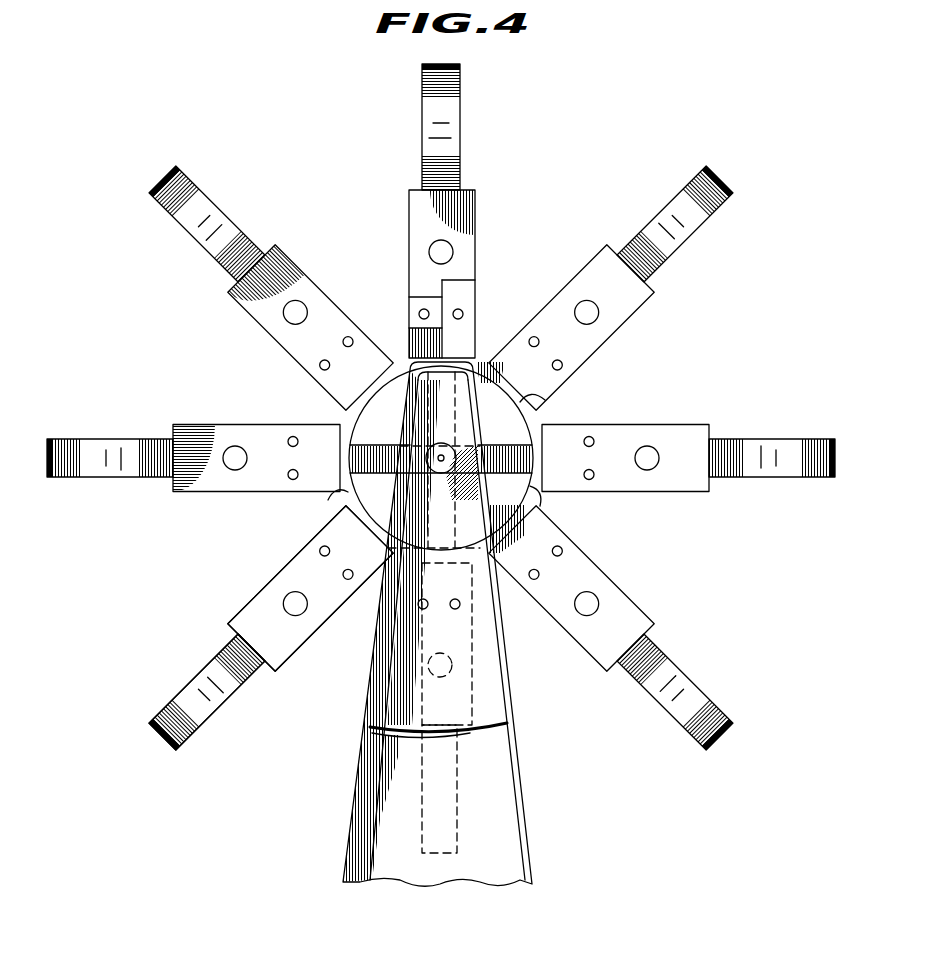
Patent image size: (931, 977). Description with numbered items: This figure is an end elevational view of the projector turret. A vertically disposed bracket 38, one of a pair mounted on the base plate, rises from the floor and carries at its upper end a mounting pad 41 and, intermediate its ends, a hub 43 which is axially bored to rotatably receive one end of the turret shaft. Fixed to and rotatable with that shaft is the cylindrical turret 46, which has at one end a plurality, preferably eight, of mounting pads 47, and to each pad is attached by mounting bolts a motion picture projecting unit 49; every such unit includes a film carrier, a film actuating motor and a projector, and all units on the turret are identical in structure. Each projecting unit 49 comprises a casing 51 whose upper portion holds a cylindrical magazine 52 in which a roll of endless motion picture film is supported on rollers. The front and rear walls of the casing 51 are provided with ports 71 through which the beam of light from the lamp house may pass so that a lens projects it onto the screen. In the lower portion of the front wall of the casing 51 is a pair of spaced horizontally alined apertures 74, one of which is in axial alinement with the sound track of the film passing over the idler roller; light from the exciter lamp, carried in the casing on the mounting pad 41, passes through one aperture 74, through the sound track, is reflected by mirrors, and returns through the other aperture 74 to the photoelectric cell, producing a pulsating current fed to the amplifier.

The bracket 38 is at (523, 785).
The mounting pad 41 is at (454, 356).
The hub 43 is at (453, 452).
The cylindrical turret 46 is at (537, 498).
The mounting pads 47 is at (530, 396).
The motion picture projecting unit 49 is at (486, 250).
The casing 51 is at (597, 340).
The cylindrical magazine 52 is at (453, 122).
The ports 71 is at (303, 306).
The apertures 74 is at (556, 360).